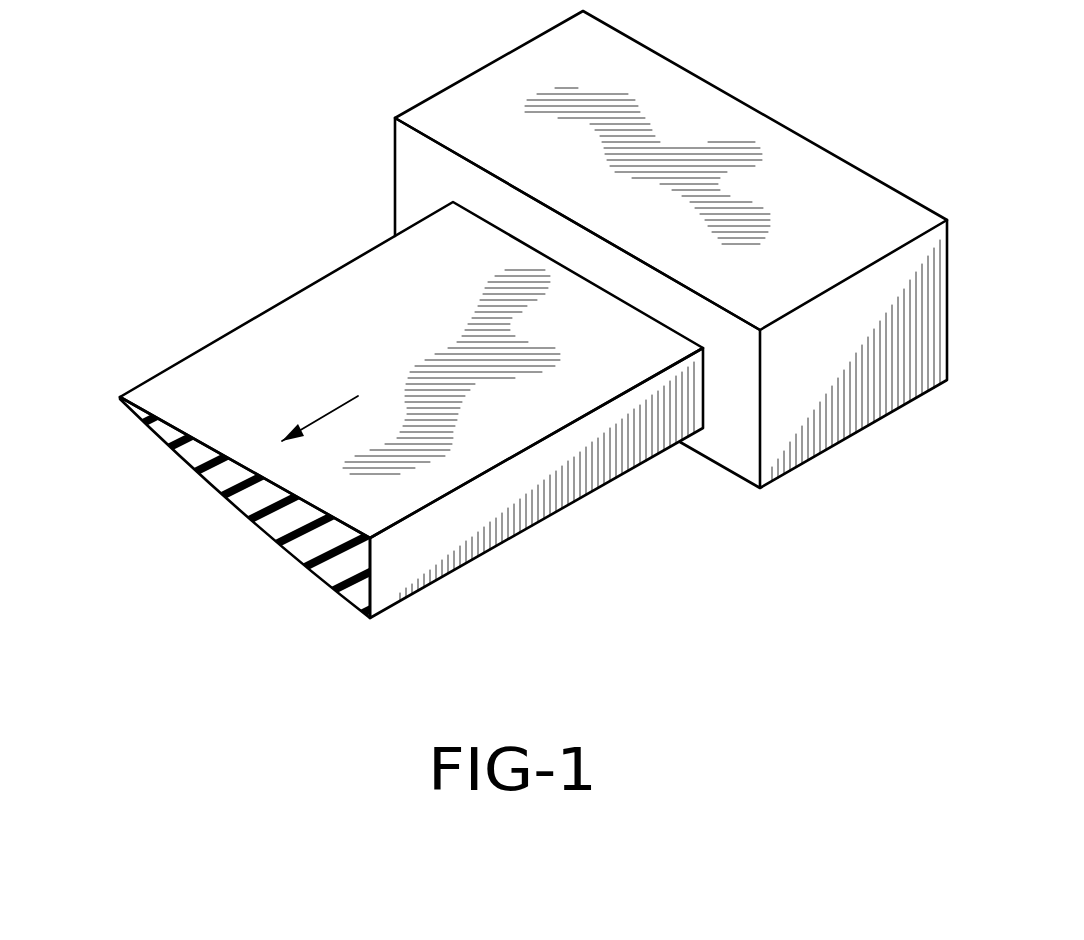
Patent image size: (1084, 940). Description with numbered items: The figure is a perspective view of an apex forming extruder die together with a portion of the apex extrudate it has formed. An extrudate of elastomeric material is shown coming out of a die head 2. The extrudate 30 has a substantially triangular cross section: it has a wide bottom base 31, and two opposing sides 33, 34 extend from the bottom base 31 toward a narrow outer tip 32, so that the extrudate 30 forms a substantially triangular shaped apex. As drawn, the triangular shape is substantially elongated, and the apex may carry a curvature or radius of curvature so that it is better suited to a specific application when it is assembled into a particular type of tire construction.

The die head 2 is at (663, 77).
The extrudate 30 is at (369, 432).
The bottom base 31 is at (407, 560).
The outer tip 32 is at (120, 402).
The side 33 is at (358, 282).
The side 34 is at (282, 557).